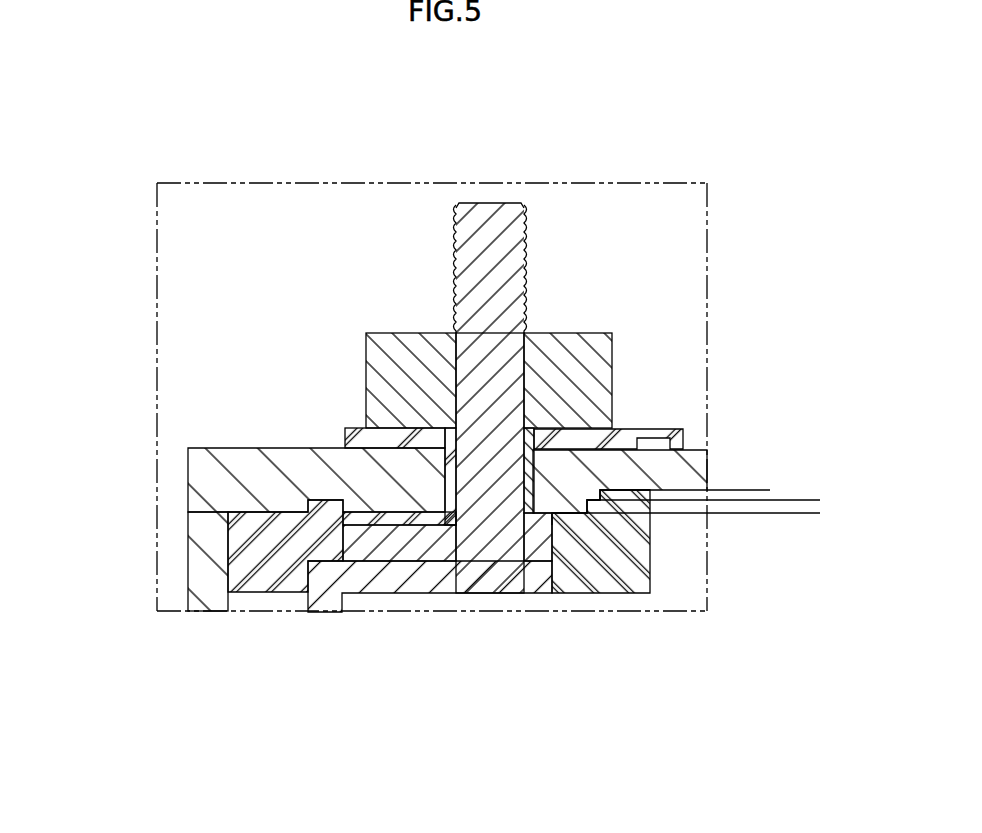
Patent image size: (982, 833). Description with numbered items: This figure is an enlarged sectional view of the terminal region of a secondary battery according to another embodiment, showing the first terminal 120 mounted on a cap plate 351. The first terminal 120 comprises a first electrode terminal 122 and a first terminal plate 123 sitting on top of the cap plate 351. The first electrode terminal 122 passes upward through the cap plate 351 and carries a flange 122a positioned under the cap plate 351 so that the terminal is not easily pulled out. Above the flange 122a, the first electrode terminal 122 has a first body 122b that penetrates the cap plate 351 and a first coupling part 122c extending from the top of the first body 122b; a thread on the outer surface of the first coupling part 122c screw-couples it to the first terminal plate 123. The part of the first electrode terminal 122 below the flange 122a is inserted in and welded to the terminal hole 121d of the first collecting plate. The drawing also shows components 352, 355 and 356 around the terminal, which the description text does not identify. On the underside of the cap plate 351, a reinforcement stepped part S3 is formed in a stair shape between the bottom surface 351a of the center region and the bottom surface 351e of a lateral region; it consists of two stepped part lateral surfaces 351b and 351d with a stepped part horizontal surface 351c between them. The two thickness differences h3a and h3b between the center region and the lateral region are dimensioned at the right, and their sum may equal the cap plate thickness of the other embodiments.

The first terminal 120 is at (404, 208).
The terminal hole 121d is at (450, 570).
The first electrode terminal 122 is at (429, 397).
The flange 122a is at (350, 543).
The first body 122b is at (503, 380).
The first coupling part 122c is at (497, 218).
The first terminal plate 123 is at (362, 340).
The cap plate 351 is at (186, 477).
The bottom surface of center region 351a is at (680, 482).
The stepped part lateral surface 351b is at (627, 490).
The stepped part horizontal surface 351c is at (617, 492).
The stepped part lateral surface 351d is at (597, 500).
The bottom surface of lateral region 351e is at (588, 500).
The sleeve washer 352 is at (449, 467).
The clamp flange 355 is at (620, 428).
The bracket 356 is at (236, 543).
The thickness difference h3a is at (760, 545).
The thickness difference h3b is at (810, 540).
The reinforcement stepped part S3 is at (513, 675).